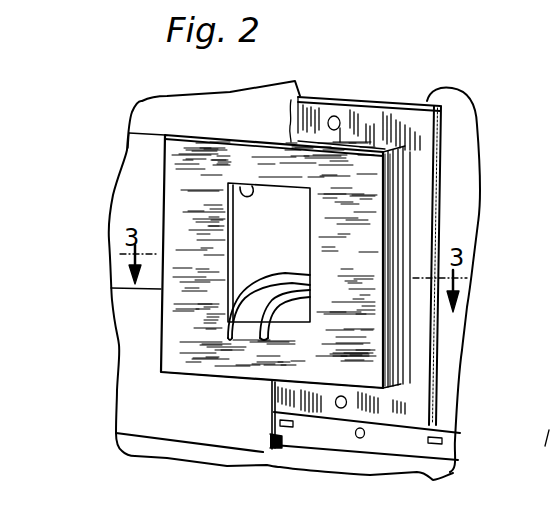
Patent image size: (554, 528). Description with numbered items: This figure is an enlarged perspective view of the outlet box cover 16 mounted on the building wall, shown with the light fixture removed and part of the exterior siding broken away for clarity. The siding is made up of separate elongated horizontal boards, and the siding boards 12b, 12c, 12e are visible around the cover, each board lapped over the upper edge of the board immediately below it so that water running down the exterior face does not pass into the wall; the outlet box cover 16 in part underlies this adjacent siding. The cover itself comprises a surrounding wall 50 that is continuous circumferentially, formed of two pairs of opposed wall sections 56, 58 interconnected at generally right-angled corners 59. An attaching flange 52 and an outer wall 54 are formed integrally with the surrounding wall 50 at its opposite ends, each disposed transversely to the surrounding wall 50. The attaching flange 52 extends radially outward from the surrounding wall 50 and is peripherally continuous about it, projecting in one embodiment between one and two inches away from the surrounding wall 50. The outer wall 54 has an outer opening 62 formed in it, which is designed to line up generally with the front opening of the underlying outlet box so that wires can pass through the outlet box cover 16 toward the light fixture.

The outlet box cover 16 is at (149, 358).
The siding board 12b is at (300, 93).
The siding board 12c is at (143, 198).
The siding board 12e is at (274, 449).
The surrounding wall 50 is at (401, 332).
The attaching flange 52 is at (428, 101).
The outer wall 54 is at (381, 363).
The opposed wall sections 56 is at (361, 142).
The opposed wall sections 58 is at (403, 187).
The right-angled corners 59 is at (407, 147).
The outer opening 62 is at (247, 186).